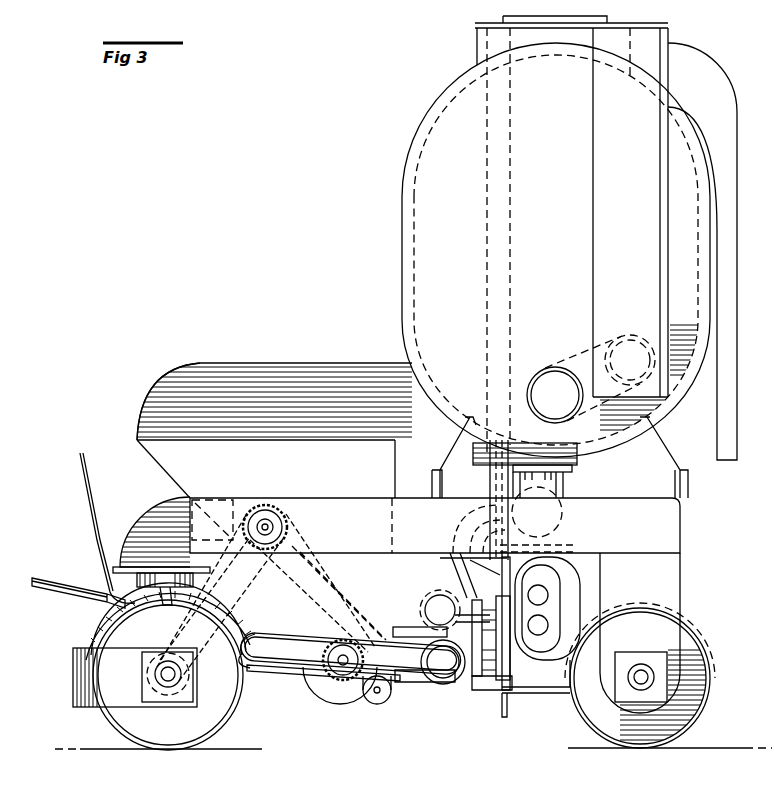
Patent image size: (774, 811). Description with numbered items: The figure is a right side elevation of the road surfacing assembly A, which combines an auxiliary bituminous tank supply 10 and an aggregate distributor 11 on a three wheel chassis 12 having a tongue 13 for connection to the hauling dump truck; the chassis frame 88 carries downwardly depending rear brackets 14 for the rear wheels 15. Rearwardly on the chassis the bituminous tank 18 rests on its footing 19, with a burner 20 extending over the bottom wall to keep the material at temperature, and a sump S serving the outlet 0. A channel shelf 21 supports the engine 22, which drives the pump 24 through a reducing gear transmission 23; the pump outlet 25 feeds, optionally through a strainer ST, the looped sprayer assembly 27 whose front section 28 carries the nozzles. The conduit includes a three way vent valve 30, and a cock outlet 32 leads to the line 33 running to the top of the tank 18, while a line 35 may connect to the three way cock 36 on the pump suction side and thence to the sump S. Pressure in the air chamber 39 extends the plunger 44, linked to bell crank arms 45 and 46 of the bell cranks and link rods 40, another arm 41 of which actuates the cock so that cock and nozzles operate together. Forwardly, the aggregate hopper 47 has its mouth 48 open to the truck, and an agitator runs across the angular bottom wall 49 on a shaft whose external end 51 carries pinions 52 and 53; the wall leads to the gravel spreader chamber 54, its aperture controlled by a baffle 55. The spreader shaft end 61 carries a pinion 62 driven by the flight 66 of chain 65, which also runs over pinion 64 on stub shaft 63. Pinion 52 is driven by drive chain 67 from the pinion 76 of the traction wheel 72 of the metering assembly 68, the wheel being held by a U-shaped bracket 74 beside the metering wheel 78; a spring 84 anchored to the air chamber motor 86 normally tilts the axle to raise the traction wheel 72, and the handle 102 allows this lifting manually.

The auxiliary bituminous tank supply 10 is at (438, 97).
The aggregate distributor 11 is at (158, 388).
The three wheel chassis 12 is at (683, 517).
The tongue 13 is at (50, 580).
The rear bracket 14 is at (673, 593).
The rear wheel 15 is at (700, 673).
The bituminous tank 18 is at (402, 228).
The footing 19 is at (667, 453).
The burner 20 is at (543, 387).
The shelf 21 is at (537, 695).
The engine 22 is at (553, 670).
The reducing gear transmission 23 is at (588, 598).
The pump 24 is at (553, 583).
The pump outlet 25 is at (467, 600).
The sprayer assembly 27 is at (293, 633).
The front section 28 is at (257, 637).
The three way vent valve 30 is at (443, 683).
The outlet 32 is at (490, 690).
The line 33 is at (508, 150).
The line 35 is at (457, 562).
The three way cock 36 is at (557, 482).
The air chamber 39 is at (491, 638).
The bell cranks and link rods 40 is at (288, 677).
The bell crank arm 41 is at (388, 628).
The plunger 44 is at (440, 610).
The bell crank arm 45 is at (402, 683).
The bell crank arm 46 is at (245, 663).
The aggregate hopper 47 is at (342, 475).
The hopper mouth 48 is at (257, 363).
The angular bottom wall 49 is at (173, 472).
The shaft end 51 is at (268, 517).
The pinion 52 is at (252, 518).
The pinion 53 is at (263, 503).
The gravel spreader chamber 54 is at (357, 703).
The baffle 55 is at (338, 593).
The shaft end 61 is at (345, 665).
The pinion 62 is at (337, 670).
The stub shaft 63 is at (378, 702).
The pinion 64 is at (393, 703).
The chain 65 is at (312, 537).
The chain flight 66 is at (287, 585).
The drive chain 67 is at (245, 595).
The metering assembly 68 is at (107, 735).
The traction wheel 72 is at (182, 732).
The U-shaped bracket 74 is at (80, 672).
The pinion 76 is at (184, 629).
The metering wheel 78 is at (100, 621).
The spring 84 is at (170, 602).
The air chamber motor 86 is at (188, 549).
The chassis frame 88 is at (361, 543).
The handle 102 is at (80, 467).
The surfacing assembly A is at (305, 152).
The sump S is at (463, 433).
The outlet 0 is at (532, 470).
The strainer ST is at (430, 590).